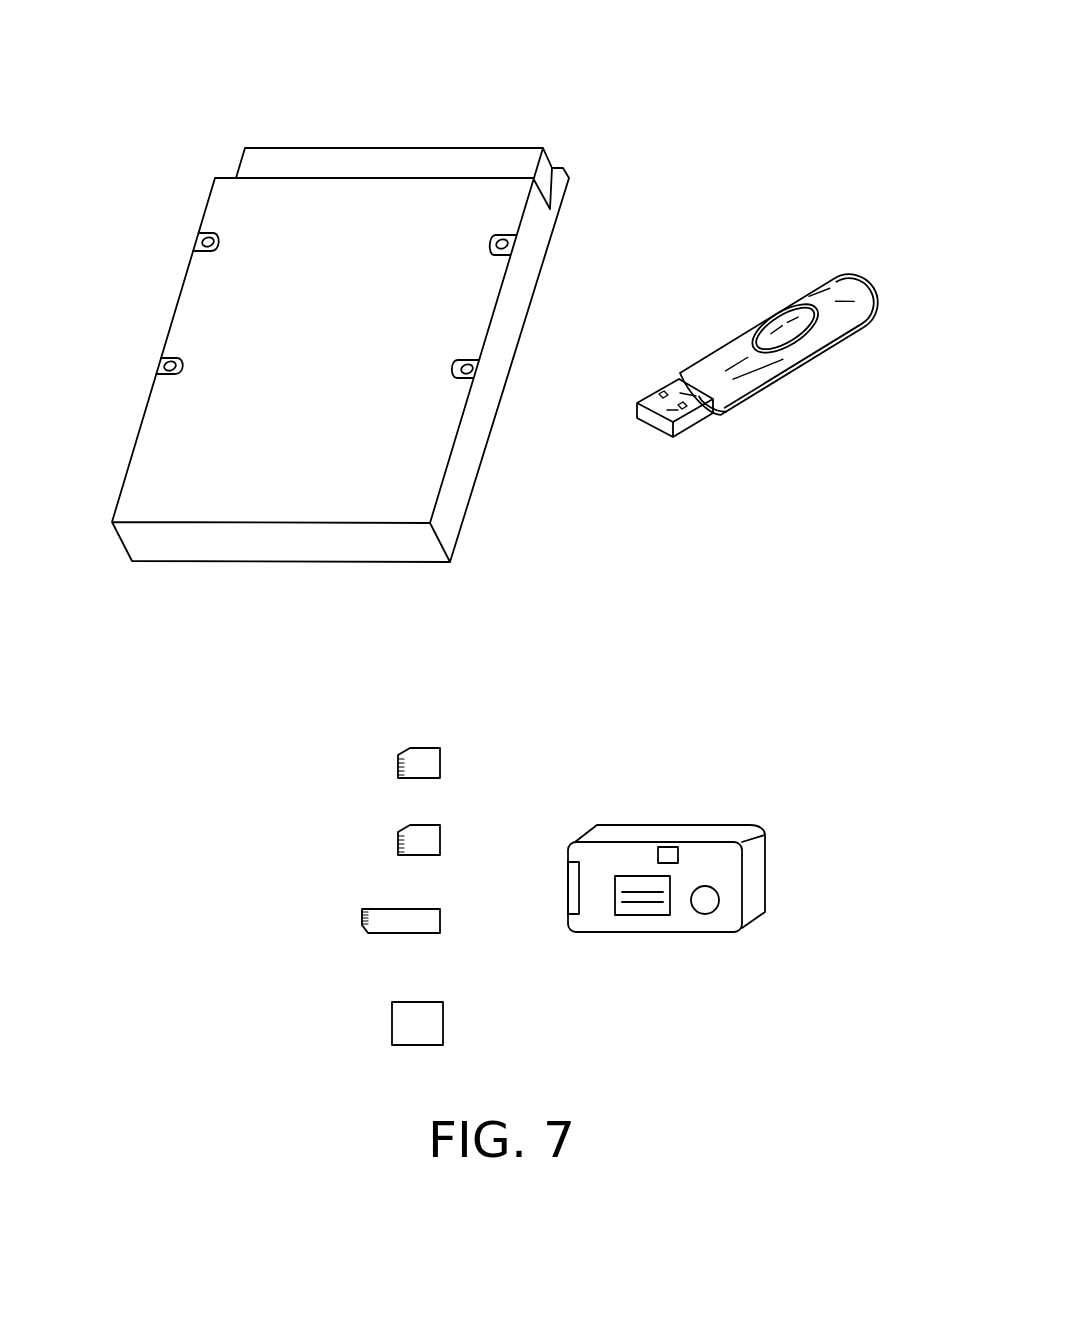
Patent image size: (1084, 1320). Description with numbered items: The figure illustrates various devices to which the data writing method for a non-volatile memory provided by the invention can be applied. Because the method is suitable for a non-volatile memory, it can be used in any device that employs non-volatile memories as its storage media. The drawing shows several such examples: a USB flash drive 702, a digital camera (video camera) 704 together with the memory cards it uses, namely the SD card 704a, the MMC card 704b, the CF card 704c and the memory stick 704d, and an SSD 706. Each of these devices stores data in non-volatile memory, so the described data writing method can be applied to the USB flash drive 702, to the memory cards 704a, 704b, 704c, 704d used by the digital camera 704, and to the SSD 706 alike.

The SSD 706 is at (533, 124).
The USB flash drive 702 is at (745, 327).
The digital camera (video camera) 704 is at (765, 865).
The SD card 704a is at (440, 753).
The MMC card 704b is at (440, 830).
The CF card 704c is at (443, 1015).
The memory stick 704d is at (440, 917).